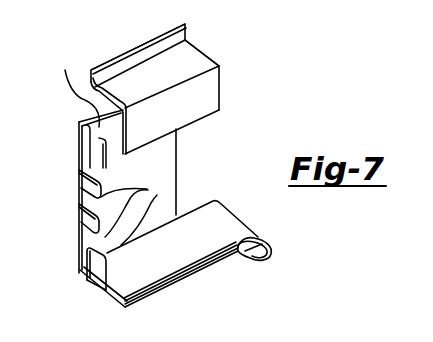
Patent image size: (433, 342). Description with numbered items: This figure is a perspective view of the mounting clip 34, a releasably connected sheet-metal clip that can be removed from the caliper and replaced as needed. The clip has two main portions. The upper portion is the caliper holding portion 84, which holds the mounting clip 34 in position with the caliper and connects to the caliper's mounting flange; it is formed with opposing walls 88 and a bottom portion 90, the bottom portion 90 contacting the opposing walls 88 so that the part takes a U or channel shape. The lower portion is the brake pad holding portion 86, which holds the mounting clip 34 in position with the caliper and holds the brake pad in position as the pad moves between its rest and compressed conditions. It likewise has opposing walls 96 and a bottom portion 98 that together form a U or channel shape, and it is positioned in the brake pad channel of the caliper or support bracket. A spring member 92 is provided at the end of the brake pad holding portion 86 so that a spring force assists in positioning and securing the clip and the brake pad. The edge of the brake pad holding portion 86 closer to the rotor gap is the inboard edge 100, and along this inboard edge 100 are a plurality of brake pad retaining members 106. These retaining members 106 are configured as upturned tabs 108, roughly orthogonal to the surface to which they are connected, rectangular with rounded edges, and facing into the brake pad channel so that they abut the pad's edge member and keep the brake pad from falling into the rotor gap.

The mounting clip 34 is at (134, 44).
The caliper holding portion 84 is at (221, 83).
The opposing walls 88 is at (100, 128).
The bottom portion 90 is at (127, 127).
The inboard edge 100 is at (79, 143).
The brake pad holding portion 86 is at (79, 198).
The brake pad retaining members 106 is at (77, 218).
The upturned tabs 108 is at (98, 178).
The bottom portion 98 is at (167, 152).
The opposing walls 96 is at (226, 222).
The spring member 92 is at (267, 257).